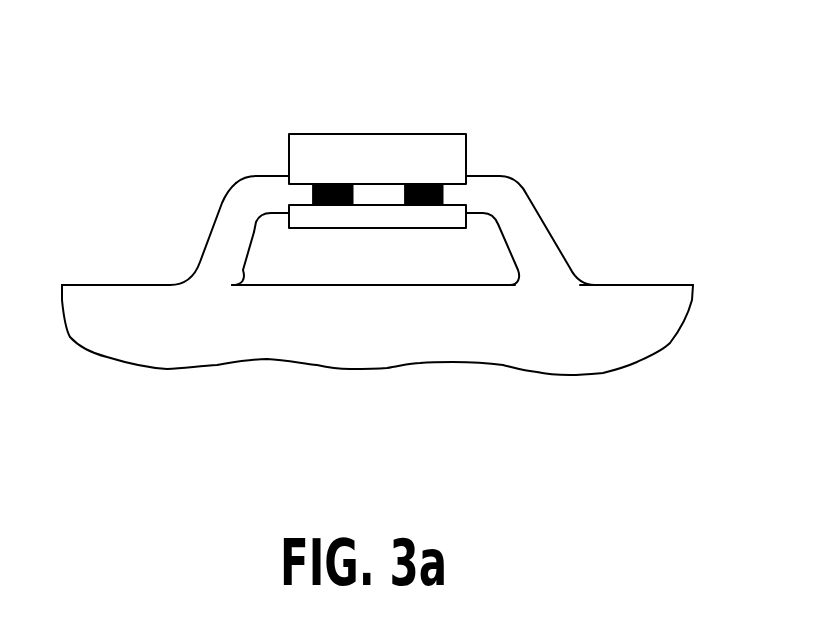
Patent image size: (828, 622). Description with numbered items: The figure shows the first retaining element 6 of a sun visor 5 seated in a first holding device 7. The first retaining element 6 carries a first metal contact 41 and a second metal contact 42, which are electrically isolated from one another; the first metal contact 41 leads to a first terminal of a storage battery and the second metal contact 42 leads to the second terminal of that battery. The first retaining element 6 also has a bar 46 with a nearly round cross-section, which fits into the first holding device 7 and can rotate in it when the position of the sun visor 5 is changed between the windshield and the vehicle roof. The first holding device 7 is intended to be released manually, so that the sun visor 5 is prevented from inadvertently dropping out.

The sun visor 5 is at (367, 345).
The first retaining element 6 is at (217, 243).
The first holding device 7 is at (382, 150).
The first metal contact 41 is at (330, 182).
The second metal contact 42 is at (421, 182).
The bar 46 is at (263, 188).